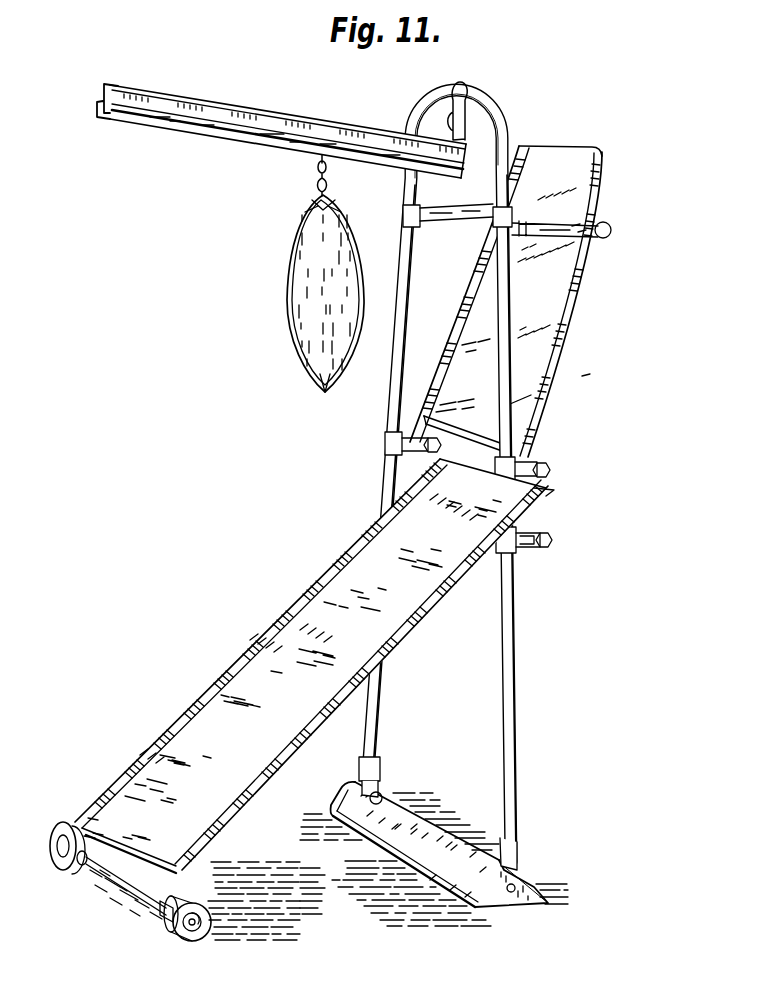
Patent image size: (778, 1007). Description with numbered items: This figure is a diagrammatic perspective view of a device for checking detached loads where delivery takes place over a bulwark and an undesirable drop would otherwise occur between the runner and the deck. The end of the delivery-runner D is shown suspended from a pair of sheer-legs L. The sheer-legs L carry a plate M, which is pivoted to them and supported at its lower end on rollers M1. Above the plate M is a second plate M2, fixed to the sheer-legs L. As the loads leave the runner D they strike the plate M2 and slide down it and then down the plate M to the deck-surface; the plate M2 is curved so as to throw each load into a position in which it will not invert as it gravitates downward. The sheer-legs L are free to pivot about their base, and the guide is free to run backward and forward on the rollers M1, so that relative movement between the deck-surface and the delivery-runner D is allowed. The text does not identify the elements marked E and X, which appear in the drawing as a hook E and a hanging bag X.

The delivery-runner D is at (197, 92).
The swivel hook E is at (316, 164).
The punching bag X is at (290, 313).
The curved plate M2 is at (553, 341).
The plate M is at (297, 630).
The sheer-legs L is at (518, 666).
The rollers M1 is at (58, 870).